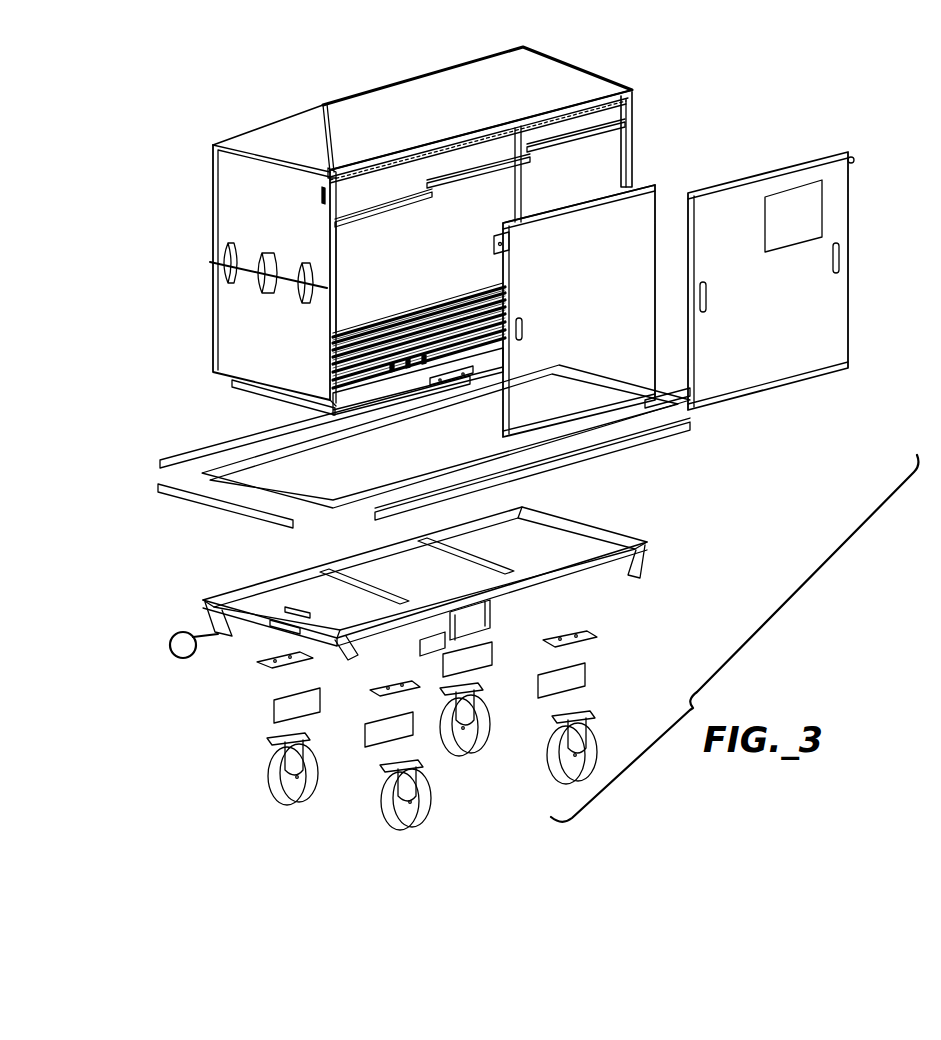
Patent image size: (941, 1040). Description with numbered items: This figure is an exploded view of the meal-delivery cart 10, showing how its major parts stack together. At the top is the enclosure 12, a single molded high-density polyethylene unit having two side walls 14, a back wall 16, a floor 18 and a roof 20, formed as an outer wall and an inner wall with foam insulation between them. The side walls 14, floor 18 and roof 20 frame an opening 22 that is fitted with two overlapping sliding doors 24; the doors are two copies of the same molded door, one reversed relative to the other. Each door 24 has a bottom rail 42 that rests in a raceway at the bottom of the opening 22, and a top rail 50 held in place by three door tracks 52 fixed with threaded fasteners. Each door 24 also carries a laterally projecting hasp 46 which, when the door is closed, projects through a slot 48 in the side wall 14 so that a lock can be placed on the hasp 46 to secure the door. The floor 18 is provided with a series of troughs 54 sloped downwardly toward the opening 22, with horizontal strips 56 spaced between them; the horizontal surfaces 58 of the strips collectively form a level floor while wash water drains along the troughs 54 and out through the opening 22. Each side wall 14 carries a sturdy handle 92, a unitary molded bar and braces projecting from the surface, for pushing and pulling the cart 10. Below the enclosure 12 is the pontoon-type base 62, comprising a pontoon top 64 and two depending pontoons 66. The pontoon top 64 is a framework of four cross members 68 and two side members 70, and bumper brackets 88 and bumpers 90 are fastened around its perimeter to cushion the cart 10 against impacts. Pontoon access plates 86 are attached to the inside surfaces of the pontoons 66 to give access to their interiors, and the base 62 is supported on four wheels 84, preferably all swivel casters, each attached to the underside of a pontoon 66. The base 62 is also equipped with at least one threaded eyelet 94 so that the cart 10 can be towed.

The meal-delivery cart 10 is at (242, 115).
The enclosure 12 is at (413, 244).
The side wall 14 is at (218, 195).
The back wall 16 is at (428, 229).
The floor 18 is at (335, 343).
The roof 20 is at (413, 86).
The opening 22 is at (634, 150).
The sliding door 24 is at (599, 295).
The bottom rail 42 is at (655, 408).
The hasp 46 is at (848, 124).
The slot 48 is at (320, 197).
The top rail 50 is at (648, 190).
The door track 52 is at (540, 152).
The trough 54 is at (392, 370).
The horizontal strip 56 is at (427, 307).
The horizontal surface 58 is at (457, 320).
The pontoon-type base 62 is at (414, 588).
The pontoon top 64 is at (347, 613).
The pontoon 66 is at (530, 590).
The cross member 68 is at (353, 577).
The side member 70 is at (372, 555).
The wheel 84 is at (315, 770).
The pontoon access plate 86 is at (470, 660).
The bumper bracket 88 is at (358, 500).
The bumper 90 is at (165, 488).
The handle 92 is at (245, 280).
The threaded eyelet 94 is at (170, 640).